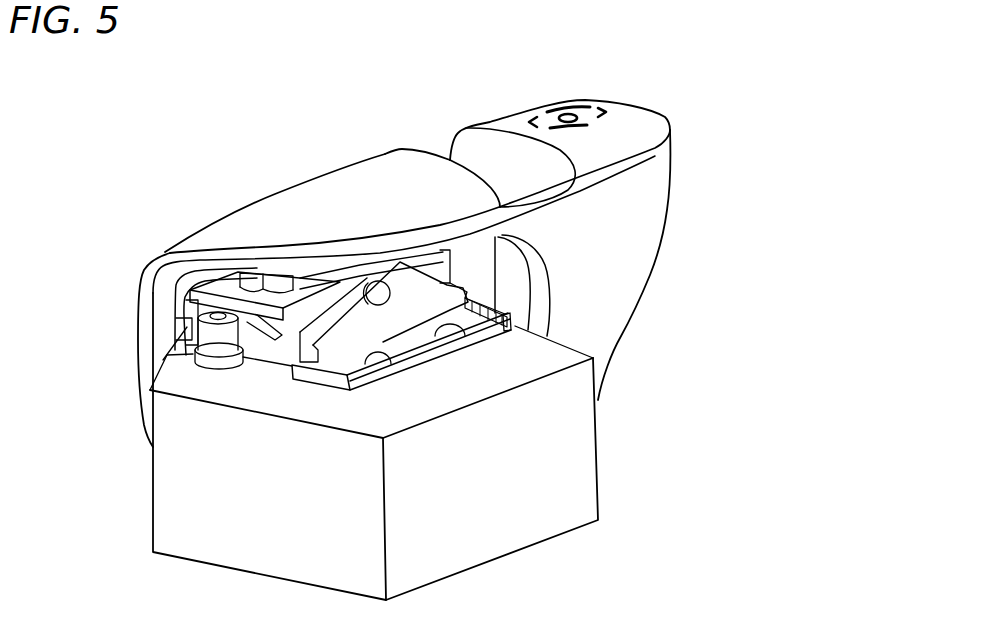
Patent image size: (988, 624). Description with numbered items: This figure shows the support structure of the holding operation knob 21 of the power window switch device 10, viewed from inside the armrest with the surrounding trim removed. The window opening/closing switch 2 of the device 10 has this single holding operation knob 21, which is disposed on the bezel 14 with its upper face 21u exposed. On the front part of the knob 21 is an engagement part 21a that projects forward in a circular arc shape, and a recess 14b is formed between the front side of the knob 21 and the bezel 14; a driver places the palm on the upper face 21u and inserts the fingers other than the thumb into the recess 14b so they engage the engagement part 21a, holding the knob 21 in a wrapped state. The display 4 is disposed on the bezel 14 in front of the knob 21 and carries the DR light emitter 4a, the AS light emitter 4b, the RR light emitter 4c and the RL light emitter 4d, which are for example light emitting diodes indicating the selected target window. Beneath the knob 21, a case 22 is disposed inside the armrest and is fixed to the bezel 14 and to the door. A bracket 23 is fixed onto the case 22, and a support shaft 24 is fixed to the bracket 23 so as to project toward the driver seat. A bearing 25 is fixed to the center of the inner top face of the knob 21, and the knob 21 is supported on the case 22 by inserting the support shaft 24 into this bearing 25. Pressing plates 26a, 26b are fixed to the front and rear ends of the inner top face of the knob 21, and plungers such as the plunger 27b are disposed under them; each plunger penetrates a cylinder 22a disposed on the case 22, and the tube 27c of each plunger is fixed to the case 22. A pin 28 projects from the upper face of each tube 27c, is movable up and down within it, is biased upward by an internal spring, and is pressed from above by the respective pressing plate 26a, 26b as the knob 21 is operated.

The power window switch device 10 is at (156, 125).
The window opening/closing switch 2 is at (475, 290).
The display 4 is at (597, 107).
The DR light emitter 4a is at (606, 114).
The AS light emitter 4b is at (560, 108).
The RR light emitter 4c is at (577, 129).
The RL light emitter 4d is at (533, 119).
The bezel 14 is at (652, 108).
The recess 14b is at (482, 147).
The holding operation knob 21 is at (277, 189).
The upper face 21u is at (363, 178).
The engagement part 21a is at (428, 151).
The case 22 is at (598, 469).
The cylinder 22a is at (220, 356).
The bracket 23 is at (437, 360).
The support shaft 24 is at (391, 294).
The bearing 25 is at (353, 272).
The pressing plate 26a is at (452, 250).
The pressing plate 26b is at (187, 295).
The plunger 27b is at (178, 336).
The tube 27c is at (132, 343).
The pin 28 is at (172, 314).